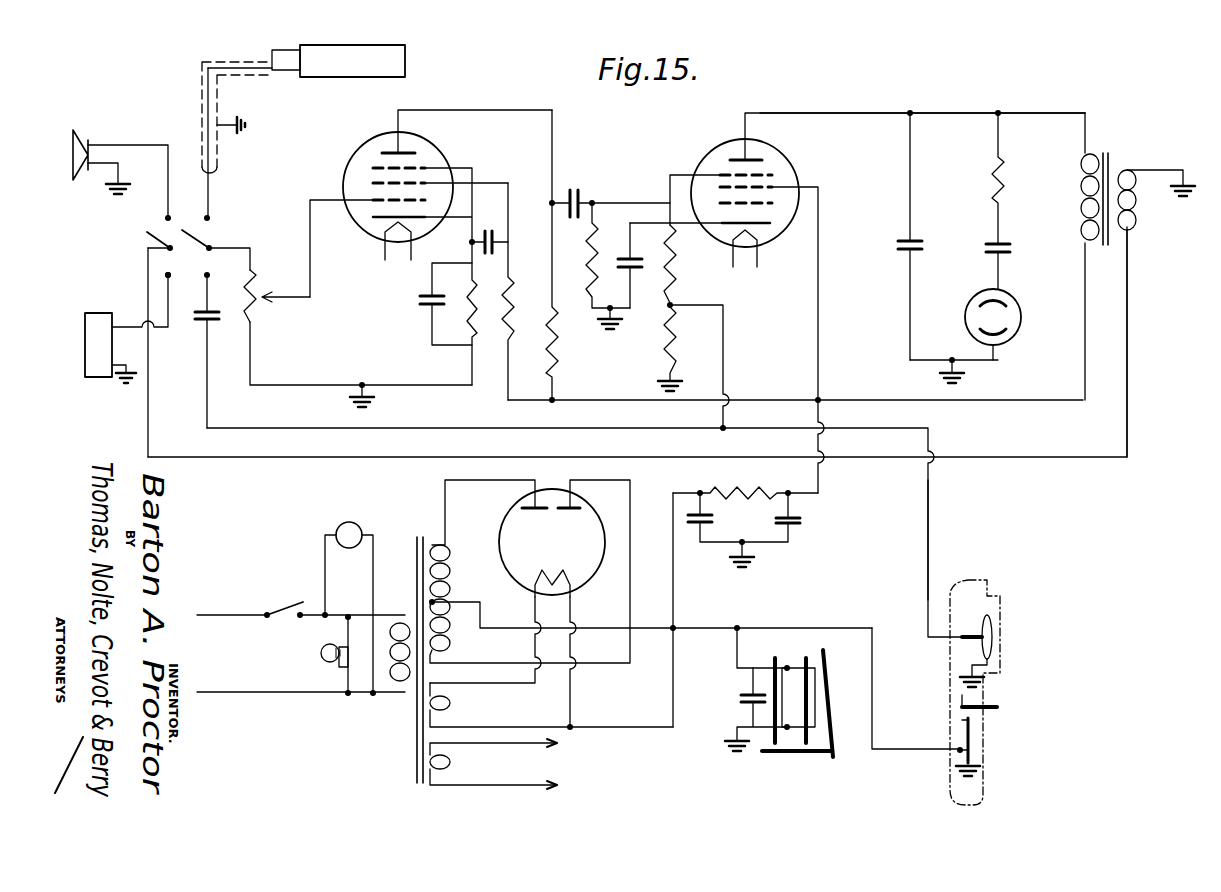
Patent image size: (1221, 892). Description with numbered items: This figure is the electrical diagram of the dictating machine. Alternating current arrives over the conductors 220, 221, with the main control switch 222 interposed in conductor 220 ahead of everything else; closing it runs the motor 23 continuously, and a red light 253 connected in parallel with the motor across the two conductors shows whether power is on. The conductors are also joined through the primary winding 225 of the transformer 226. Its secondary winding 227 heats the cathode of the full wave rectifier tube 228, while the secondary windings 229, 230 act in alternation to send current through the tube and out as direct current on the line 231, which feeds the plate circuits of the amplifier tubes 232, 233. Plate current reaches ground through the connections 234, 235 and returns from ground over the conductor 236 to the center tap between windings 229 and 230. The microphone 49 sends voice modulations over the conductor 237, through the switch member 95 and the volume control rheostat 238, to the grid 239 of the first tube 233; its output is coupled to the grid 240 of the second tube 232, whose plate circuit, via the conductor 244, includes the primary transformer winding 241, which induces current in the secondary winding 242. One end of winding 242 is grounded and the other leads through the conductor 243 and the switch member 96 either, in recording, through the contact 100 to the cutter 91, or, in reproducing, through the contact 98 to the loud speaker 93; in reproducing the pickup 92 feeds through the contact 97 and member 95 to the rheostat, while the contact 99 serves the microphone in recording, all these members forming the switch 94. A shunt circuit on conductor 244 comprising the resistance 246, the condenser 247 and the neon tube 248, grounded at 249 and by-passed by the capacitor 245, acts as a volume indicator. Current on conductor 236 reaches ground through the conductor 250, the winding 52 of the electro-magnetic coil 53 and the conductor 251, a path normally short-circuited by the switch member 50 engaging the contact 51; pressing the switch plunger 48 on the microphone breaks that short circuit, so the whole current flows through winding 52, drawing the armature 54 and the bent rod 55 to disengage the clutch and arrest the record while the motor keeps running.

The motor 23 is at (353, 522).
The switch plunger 48 is at (995, 705).
The microphone 49 is at (984, 578).
The plunger-controlled switch member 50 is at (958, 748).
The contact 51 is at (972, 741).
The winding 52 is at (808, 660).
The electro-magnetic coil 53 is at (781, 663).
The armature 54 is at (830, 714).
The bent rod 55 is at (800, 754).
The cutter 91 is at (86, 352).
The electrical pickup 92 is at (400, 47).
The loud speaker 93 is at (80, 175).
The switch 94 is at (215, 242).
The switch member 95 is at (204, 250).
The switch member 96 is at (150, 235).
The contact 97 is at (212, 213).
The contact 98 is at (165, 212).
The contact 99 is at (210, 284).
The contact 100 is at (170, 282).
The conductor 220 is at (226, 613).
The conductor 221 is at (228, 695).
The main control switch 222 is at (300, 606).
The primary winding 225 is at (390, 682).
The transformer 226 is at (407, 599).
The secondary winding 227 is at (452, 705).
The full wave rectifier tube 228 is at (510, 562).
The secondary winding 229 is at (455, 546).
The secondary winding 230 is at (462, 654).
The line 231 is at (630, 727).
The amplifier tube 232 is at (709, 150).
The amplifier tube 233 is at (371, 147).
The connection 234 is at (606, 321).
The connection 235 is at (374, 398).
The conductor 236 is at (874, 628).
The conductor 237 is at (931, 530).
The volume control rheostat 238 is at (265, 306).
The grid 239 is at (368, 205).
The grid 240 is at (721, 204).
The primary transformer winding 241 is at (1081, 202).
The secondary winding 242 is at (1136, 224).
The conductor 243 is at (1043, 459).
The conductor 244 is at (854, 113).
The capacitor 245 is at (900, 243).
The resistance 246 is at (990, 186).
The condenser 247 is at (990, 246).
The neon tube 248 is at (1021, 313).
The ground connection 249 is at (940, 366).
The conductor 250 is at (736, 656).
The conductor 251 is at (757, 740).
The red light 253 is at (322, 660).